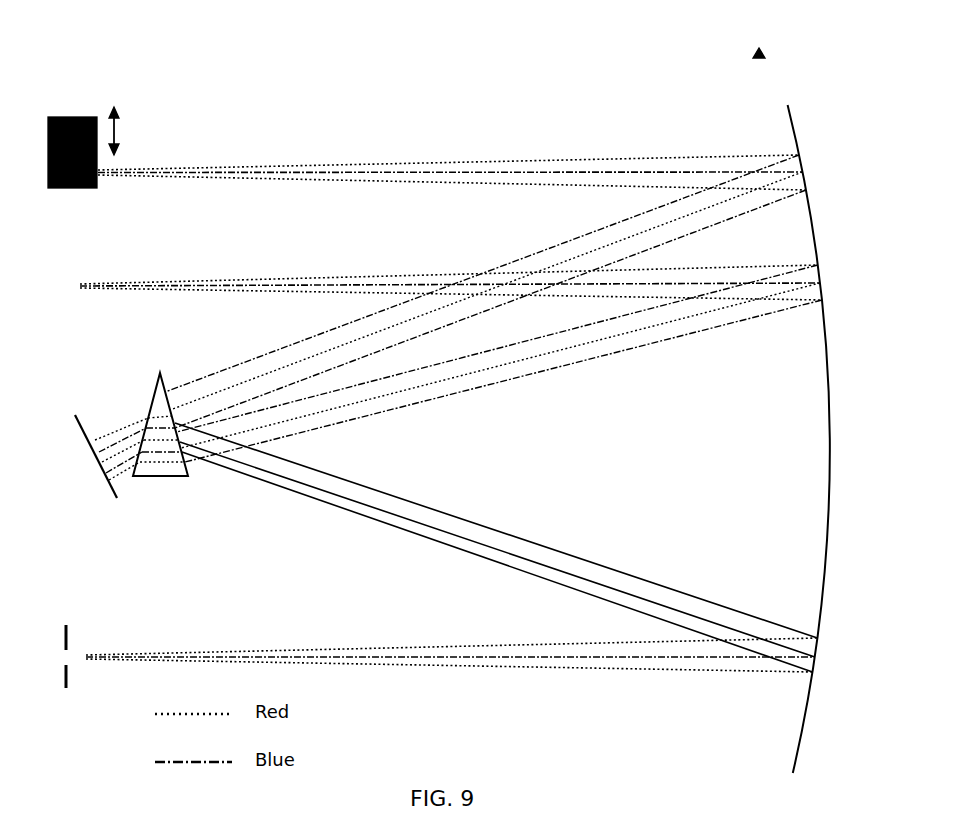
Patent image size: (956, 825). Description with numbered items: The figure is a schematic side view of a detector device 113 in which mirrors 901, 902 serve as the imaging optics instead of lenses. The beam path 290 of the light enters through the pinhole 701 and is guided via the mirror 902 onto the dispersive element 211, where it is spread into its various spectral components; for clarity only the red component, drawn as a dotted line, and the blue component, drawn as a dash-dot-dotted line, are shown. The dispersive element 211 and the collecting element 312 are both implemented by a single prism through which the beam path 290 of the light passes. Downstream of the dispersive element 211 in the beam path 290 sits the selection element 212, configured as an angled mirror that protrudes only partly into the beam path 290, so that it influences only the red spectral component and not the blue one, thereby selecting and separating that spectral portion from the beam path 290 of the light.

The selection element 212 is at (81, 117).
The mirror 902 is at (791, 111).
The detector device 113 is at (762, 49).
The beam path of the light 290 is at (590, 159).
The mirror 901 is at (76, 414).
The dispersive element 211 is at (185, 407).
The collecting element 312 is at (160, 374).
The pinhole 701 is at (67, 622).